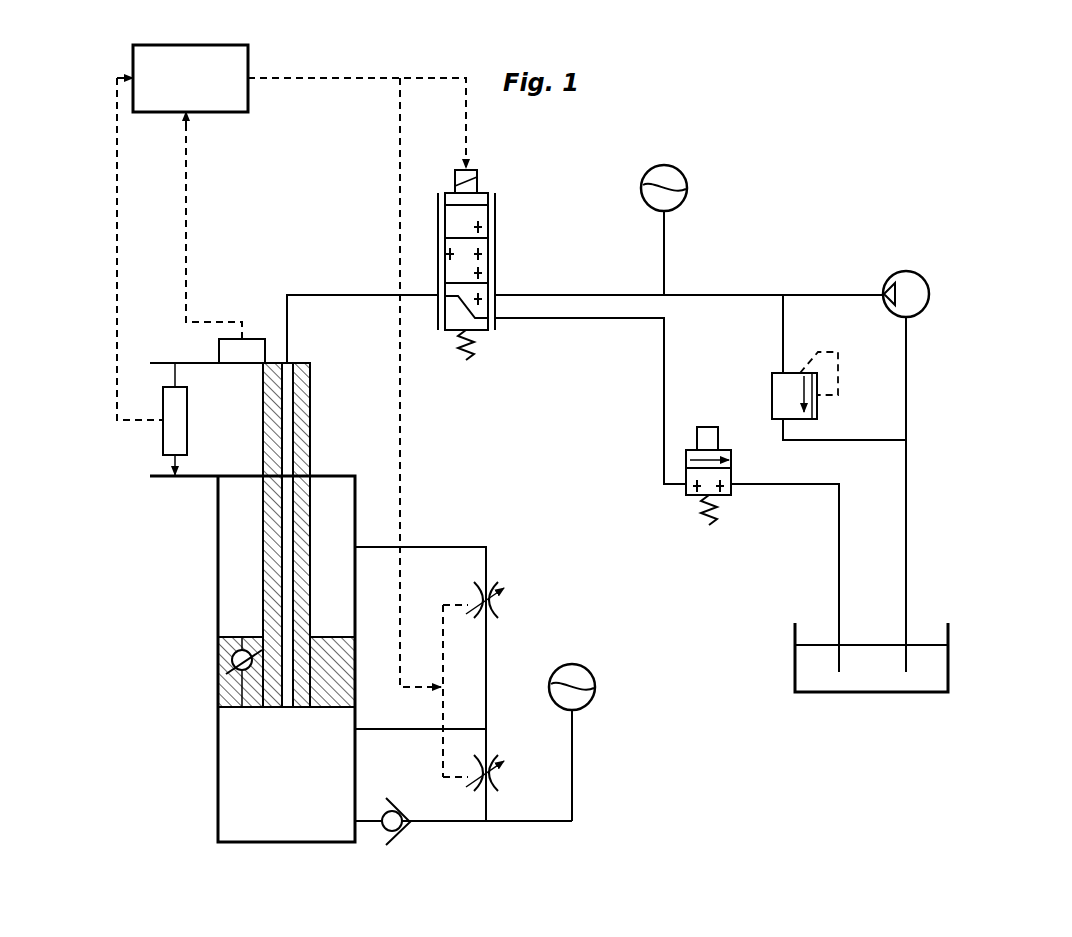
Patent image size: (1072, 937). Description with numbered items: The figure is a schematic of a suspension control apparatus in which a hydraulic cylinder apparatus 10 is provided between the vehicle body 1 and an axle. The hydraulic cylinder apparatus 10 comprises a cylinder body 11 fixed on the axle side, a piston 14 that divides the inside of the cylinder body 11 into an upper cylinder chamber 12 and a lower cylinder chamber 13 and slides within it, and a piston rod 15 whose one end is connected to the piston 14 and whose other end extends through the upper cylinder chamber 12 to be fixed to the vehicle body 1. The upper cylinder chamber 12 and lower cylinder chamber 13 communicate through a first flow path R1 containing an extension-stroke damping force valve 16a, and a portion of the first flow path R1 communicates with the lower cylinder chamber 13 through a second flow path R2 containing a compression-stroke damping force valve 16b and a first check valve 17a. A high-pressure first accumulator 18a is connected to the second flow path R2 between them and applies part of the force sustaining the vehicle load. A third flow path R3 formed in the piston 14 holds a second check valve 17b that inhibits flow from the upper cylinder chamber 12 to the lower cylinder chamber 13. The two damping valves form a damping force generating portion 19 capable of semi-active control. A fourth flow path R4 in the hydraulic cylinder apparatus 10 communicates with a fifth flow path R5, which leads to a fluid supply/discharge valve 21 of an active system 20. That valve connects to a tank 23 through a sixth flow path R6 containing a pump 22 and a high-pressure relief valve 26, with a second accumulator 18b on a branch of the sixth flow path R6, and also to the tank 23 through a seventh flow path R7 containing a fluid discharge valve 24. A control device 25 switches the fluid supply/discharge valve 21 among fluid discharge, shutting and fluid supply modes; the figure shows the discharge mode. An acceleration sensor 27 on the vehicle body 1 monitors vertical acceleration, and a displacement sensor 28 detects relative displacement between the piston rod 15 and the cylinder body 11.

The vehicle body 1 is at (200, 363).
The hydraulic cylinder apparatus 10 is at (220, 619).
The cylinder body 11 is at (218, 770).
The upper cylinder chamber 12 is at (228, 578).
The lower cylinder chamber 13 is at (258, 818).
The piston 14 is at (238, 690).
The piston rod 15 is at (270, 522).
The extension-stroke damping force valve 16a is at (498, 596).
The compression-stroke damping force valve 16b is at (500, 770).
The first check valve 17a is at (405, 830).
The second check valve 17b is at (225, 665).
The first accumulator 18a is at (594, 675).
The second accumulator 18b is at (687, 175).
The damping force generating portion 19 is at (470, 663).
The active system 20 is at (775, 412).
The fluid supply/discharge valve 21 is at (497, 250).
The pump 22 is at (929, 294).
The tank 23 is at (948, 672).
The fluid discharge valve 24 is at (686, 490).
The control device 25 is at (133, 70).
The relief valve 26 is at (772, 396).
The acceleration sensor 27 is at (252, 339).
The displacement sensor 28 is at (163, 440).
The first flow path R1 is at (490, 635).
The second flow path R2 is at (475, 825).
The third flow path R3 is at (220, 642).
The fourth flow path R4 is at (312, 418).
The fifth flow path R5 is at (360, 297).
The sixth flow path R6 is at (815, 295).
The seventh flow path R7 is at (664, 375).